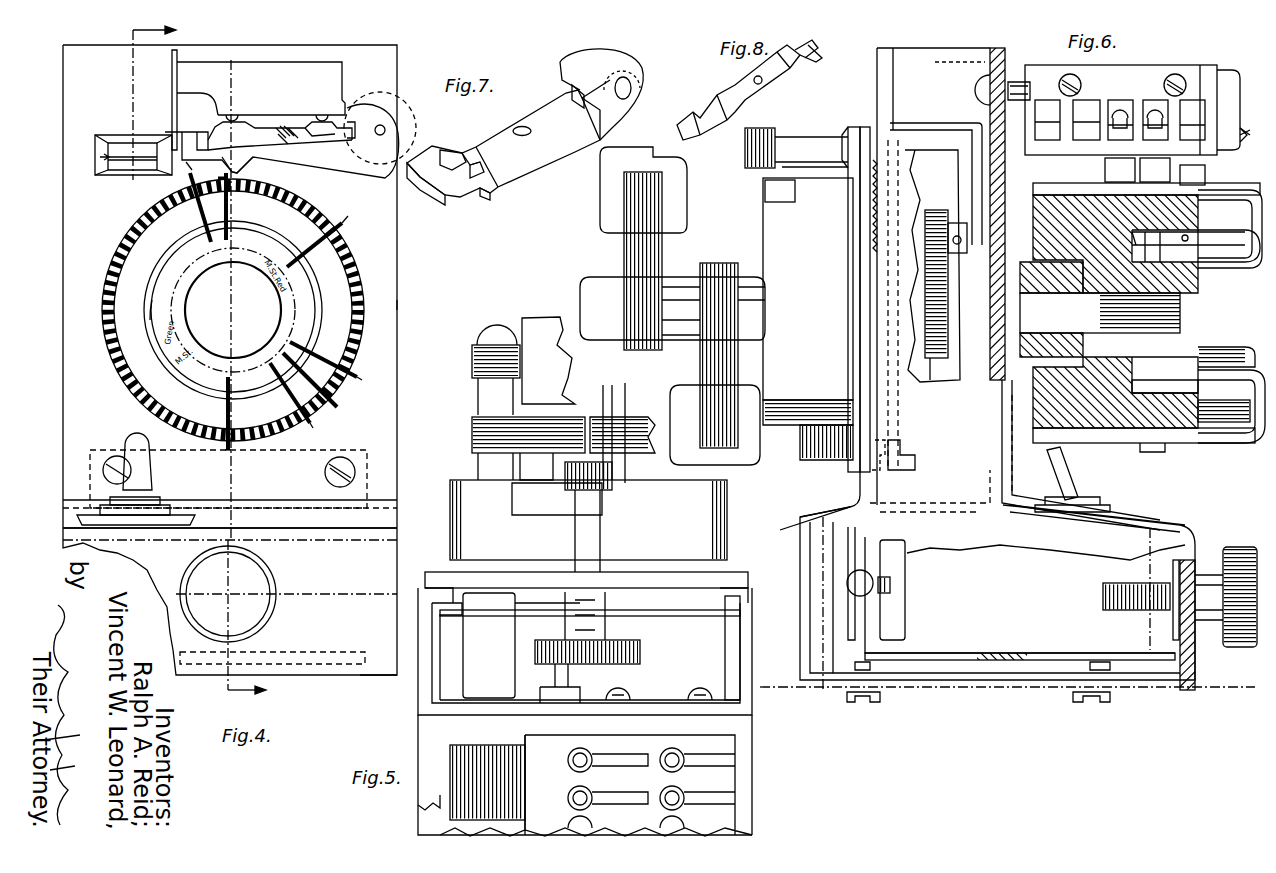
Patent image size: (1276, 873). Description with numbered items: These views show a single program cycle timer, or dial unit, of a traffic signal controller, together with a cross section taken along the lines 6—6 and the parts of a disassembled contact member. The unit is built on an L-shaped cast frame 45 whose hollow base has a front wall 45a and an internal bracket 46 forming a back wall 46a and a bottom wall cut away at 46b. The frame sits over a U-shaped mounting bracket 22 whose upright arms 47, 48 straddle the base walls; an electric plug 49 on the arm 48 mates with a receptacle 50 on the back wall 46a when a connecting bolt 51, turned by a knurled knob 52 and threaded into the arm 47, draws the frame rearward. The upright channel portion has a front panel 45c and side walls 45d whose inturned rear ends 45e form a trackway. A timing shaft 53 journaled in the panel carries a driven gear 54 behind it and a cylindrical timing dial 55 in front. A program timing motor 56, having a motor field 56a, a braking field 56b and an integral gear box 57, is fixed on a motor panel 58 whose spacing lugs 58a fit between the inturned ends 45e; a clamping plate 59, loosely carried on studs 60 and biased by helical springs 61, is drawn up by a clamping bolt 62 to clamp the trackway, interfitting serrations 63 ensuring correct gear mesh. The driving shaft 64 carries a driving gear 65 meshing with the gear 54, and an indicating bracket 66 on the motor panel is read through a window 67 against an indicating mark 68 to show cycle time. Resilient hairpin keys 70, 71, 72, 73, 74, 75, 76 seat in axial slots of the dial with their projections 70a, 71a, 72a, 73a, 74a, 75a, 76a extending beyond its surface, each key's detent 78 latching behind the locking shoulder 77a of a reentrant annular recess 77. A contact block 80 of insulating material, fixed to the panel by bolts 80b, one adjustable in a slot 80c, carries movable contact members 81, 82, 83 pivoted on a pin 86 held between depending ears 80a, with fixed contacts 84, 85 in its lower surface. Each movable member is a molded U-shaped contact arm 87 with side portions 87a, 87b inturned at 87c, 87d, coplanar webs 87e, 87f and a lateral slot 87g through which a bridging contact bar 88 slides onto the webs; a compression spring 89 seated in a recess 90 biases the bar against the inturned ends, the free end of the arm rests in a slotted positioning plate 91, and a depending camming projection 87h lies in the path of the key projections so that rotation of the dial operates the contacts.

In FIG. 4, the pantograph link 6 is at (191, 361).
In FIG. 6, the timer mounting bracket 22 is at (940, 672).
In FIG. 4, the program timer frame 45 is at (399, 306).
In FIG. 6, the program timer frame 45 is at (1170, 525).
In FIG. 4, the front wall 45a is at (378, 678).
In FIG. 6, the front wall 45a is at (1195, 662).
In FIG. 5, the front panel 45c is at (752, 730).
In FIG. 6, the front panel 45c is at (1005, 55).
In FIG. 5, the side walls 45d is at (752, 700).
In FIG. 6, the side walls 45d is at (965, 60).
In FIG. 5, the inturned rear end portions 45e is at (440, 605).
In FIG. 6, the inturned rear end portions 45e is at (878, 127).
In FIG. 4, the bracket 46 is at (368, 478).
In FIG. 6, the bracket 46 is at (928, 515).
In FIG. 4, the back wall 46a is at (400, 540).
In FIG. 6, the back wall 46a is at (905, 622).
In FIG. 4, the cut away 46b is at (270, 650).
In FIG. 6, the cut away 46b is at (1050, 653).
In FIG. 6, the upright arm 47 is at (1145, 635).
In FIG. 6, the upright arm 48 is at (810, 658).
In FIG. 6, the multiple prong electric plug 49 is at (790, 520).
In FIG. 6, the electric receptacle 50 is at (850, 622).
In FIG. 6, the connecting bolt 51 is at (1103, 592).
In FIG. 4, the knurled knob 52 is at (272, 578).
In FIG. 6, the knurled knob 52 is at (1236, 547).
In FIG. 6, the timing shaft 53 is at (1030, 270).
In FIG. 5, the driven gear 54 is at (635, 660).
In FIG. 6, the driven gear 54 is at (935, 370).
In FIG. 6, the timing dial 55 is at (1200, 296).
In FIG. 5, the program timing motor 56 is at (585, 398).
In FIG. 6, the program timing motor 56 is at (683, 280).
In FIG. 5, the motor field 56a is at (478, 432).
In FIG. 6, the motor field 56a is at (700, 362).
In FIG. 5, the braking field 56b is at (472, 360).
In FIG. 6, the braking field 56b is at (624, 258).
In FIG. 5, the gear box 57 is at (727, 500).
In FIG. 6, the gear box 57 is at (763, 228).
In FIG. 5, the motor mounting panel 58 is at (648, 574).
In FIG. 6, the motor mounting panel 58 is at (848, 313).
In FIG. 5, the spacing lugs 58a is at (705, 598).
In FIG. 6, the spacing lugs 58a is at (872, 140).
In FIG. 5, the clamping plate 59 is at (650, 616).
In FIG. 6, the clamping plate 59 is at (905, 418).
In FIG. 6, the mounting studs 60 is at (878, 470).
In FIG. 6, the helical springs 61 is at (838, 460).
In FIG. 5, the clamping bolt 62 is at (575, 538).
In FIG. 6, the clamping bolt 62 is at (805, 137).
In FIG. 5, the serrations 63 is at (430, 595).
In FIG. 6, the serrations 63 is at (872, 198).
In FIG. 6, the driving shaft 64 is at (922, 215).
In FIG. 5, the driving gear 65 is at (570, 642).
In FIG. 6, the driving gear 65 is at (938, 212).
In FIG. 4, the indicating bracket 66 is at (125, 140).
In FIG. 6, the indicating bracket 66 is at (944, 122).
In FIG. 4, the window 67 is at (118, 165).
In FIG. 6, the window 67 is at (1006, 168).
In FIG. 4, the indicating mark 68 is at (100, 162).
In FIG. 4, the actuating key 70 is at (200, 207).
In FIG. 4, the contact actuating projection 70a is at (186, 180).
In FIG. 4, the actuating key 71 is at (229, 214).
In FIG. 6, the actuating key 71 is at (1082, 185).
In FIG. 4, the contact actuating projection 71a is at (222, 178).
In FIG. 6, the contact actuating projection 71a is at (1190, 165).
In FIG. 4, the actuating key 72 is at (304, 245).
In FIG. 6, the actuating key 72 is at (1240, 270).
In FIG. 4, the contact actuating projection 72a is at (346, 220).
In FIG. 4, the actuating key 73 is at (320, 350).
In FIG. 6, the actuating key 73 is at (1210, 347).
In FIG. 4, the contact actuating projection 73a is at (362, 378).
In FIG. 6, the actuating key 74 is at (1235, 370).
In FIG. 4, the contact actuating projection 74a is at (338, 405).
In FIG. 4, the actuating key 75 is at (226, 404).
In FIG. 6, the actuating key 75 is at (1195, 443).
In FIG. 4, the contact actuating projection 75a is at (235, 452).
In FIG. 6, the contact actuating projection 75a is at (1150, 452).
In FIG. 4, the actuating key 76 is at (284, 392).
In FIG. 6, the actuating key 76 is at (1230, 422).
In FIG. 4, the contact actuating projection 76a is at (313, 427).
In FIG. 4, the reentrant annular recess 77 is at (150, 318).
In FIG. 6, the reentrant annular recess 77 is at (1198, 220).
In FIG. 6, the annular locking shoulder 77a is at (1140, 240).
In FIG. 6, the spring nib 78 is at (1100, 285).
In FIG. 4, the contact block 80 is at (262, 60).
In FIG. 5, the contact block 80 is at (525, 820).
In FIG. 6, the contact block 80 is at (1172, 62).
In FIG. 4, the depending ears 80a is at (393, 108).
In FIG. 6, the depending ears 80a is at (1230, 72).
In FIG. 5, the bolts 80b is at (626, 698).
In FIG. 6, the bolts 80b is at (980, 90).
In FIG. 6, the slot 80c is at (975, 62).
In FIG. 6, the movable contact member 81 is at (1112, 158).
In FIG. 6, the movable contact member 82 is at (1152, 158).
In FIG. 4, the movable contact member 83 is at (308, 176).
In FIG. 6, the movable contact member 83 is at (1200, 162).
In FIG. 4, the fixed contact member 84 is at (233, 113).
In FIG. 6, the fixed contact member 84 is at (1120, 116).
In FIG. 4, the fixed contact member 85 is at (322, 113).
In FIG. 4, the fixed pivot pin 86 is at (386, 130).
In FIG. 6, the fixed pivot pin 86 is at (1242, 140).
In FIG. 7, the contact arm 87 is at (562, 150).
In FIG. 7, the side portion 87a is at (612, 68).
In FIG. 7, the side portion 87b is at (445, 180).
In FIG. 7, the inturned end portion 87c is at (560, 75).
In FIG. 4, the inturned end portion 87d is at (203, 131).
In FIG. 7, the inturned end portion 87d is at (456, 150).
In FIG. 4, the web 87e is at (350, 140).
In FIG. 7, the web 87e is at (570, 90).
In FIG. 4, the web 87f is at (230, 137).
In FIG. 7, the web 87f is at (480, 162).
In FIG. 4, the lateral slot 87g is at (312, 140).
In FIG. 7, the lateral slot 87g is at (586, 118).
In FIG. 4, the camming projection 87h is at (240, 166).
In FIG. 7, the camming projection 87h is at (493, 196).
In FIG. 4, the bridging contact bar 88 is at (258, 125).
In FIG. 8, the bridging contact bar 88 is at (730, 90).
In FIG. 6, the bridging contact bar 88 is at (1152, 116).
In FIG. 4, the compression spring 89 is at (283, 126).
In FIG. 7, the recess 90 is at (518, 127).
In FIG. 4, the positioning plate 91 is at (172, 100).
In FIG. 5, the positioning plate 91 is at (528, 758).
In FIG. 6, the positioning plate 91 is at (1205, 65).